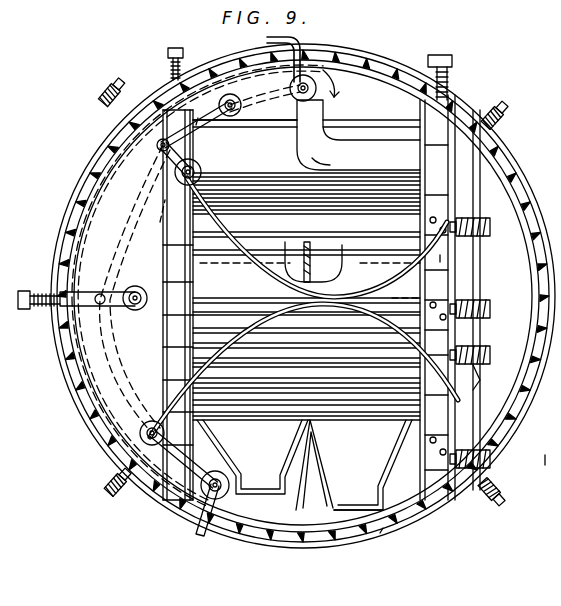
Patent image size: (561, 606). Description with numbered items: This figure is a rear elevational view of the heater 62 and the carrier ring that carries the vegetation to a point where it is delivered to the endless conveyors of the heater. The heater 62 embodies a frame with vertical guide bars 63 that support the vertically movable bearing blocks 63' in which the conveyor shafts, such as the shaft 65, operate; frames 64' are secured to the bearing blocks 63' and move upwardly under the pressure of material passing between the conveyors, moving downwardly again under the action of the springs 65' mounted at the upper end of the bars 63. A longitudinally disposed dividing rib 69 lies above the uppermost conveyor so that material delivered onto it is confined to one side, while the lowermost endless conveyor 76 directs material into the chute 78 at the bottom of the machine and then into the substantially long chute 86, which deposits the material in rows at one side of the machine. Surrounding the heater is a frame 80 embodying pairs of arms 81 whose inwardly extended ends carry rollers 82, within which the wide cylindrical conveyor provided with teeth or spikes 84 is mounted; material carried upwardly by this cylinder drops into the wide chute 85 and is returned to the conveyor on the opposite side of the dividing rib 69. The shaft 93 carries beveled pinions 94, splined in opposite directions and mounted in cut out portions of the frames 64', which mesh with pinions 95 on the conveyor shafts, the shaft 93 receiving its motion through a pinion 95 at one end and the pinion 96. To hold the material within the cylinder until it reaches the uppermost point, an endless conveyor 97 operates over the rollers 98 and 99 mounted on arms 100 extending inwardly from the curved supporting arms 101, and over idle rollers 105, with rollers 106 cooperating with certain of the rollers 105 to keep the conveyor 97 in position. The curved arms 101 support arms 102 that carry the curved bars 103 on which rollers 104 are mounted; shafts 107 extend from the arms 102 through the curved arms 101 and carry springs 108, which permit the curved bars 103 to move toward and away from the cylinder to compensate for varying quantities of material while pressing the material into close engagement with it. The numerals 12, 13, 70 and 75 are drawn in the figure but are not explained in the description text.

The apparatus frame 12 is at (74, 54).
The endless belt 13 is at (504, 300).
The heater 62 is at (406, 297).
The vertical guide bars 63 is at (332, 285).
The bearing blocks 63' is at (486, 403).
The frames 64' is at (494, 379).
The shaft 65 is at (545, 74).
The springs 65' is at (467, 76).
The dividing rib 69 is at (313, 268).
The upper screen 70 is at (245, 134).
The screen drum 75 is at (306, 270).
The endless conveyor 76 is at (354, 465).
The chute 78 is at (252, 457).
The frame 80 is at (345, 288).
The arms 81 is at (262, 283).
The rollers 82 is at (502, 120).
The teeth or spikes 84 is at (380, 533).
The chute 85 is at (334, 164).
The chute 86 is at (358, 490).
The shaft 93 is at (481, 275).
The beveled pinions 94 is at (488, 316).
The pinions 95 is at (493, 345).
The pinion 96 is at (544, 451).
The endless conveyor 97 is at (103, 190).
The roller 98 is at (308, 86).
The roller 99 is at (222, 500).
The arms 100 is at (213, 500).
The curved supporting arms 101 is at (100, 368).
The arms 102 is at (190, 162).
The curved bars 103 is at (198, 118).
The rollers 104 is at (160, 137).
The idle rollers 105 is at (160, 222).
The rollers 106 is at (200, 176).
The shafts 107 is at (108, 82).
The springs 108 is at (103, 98).